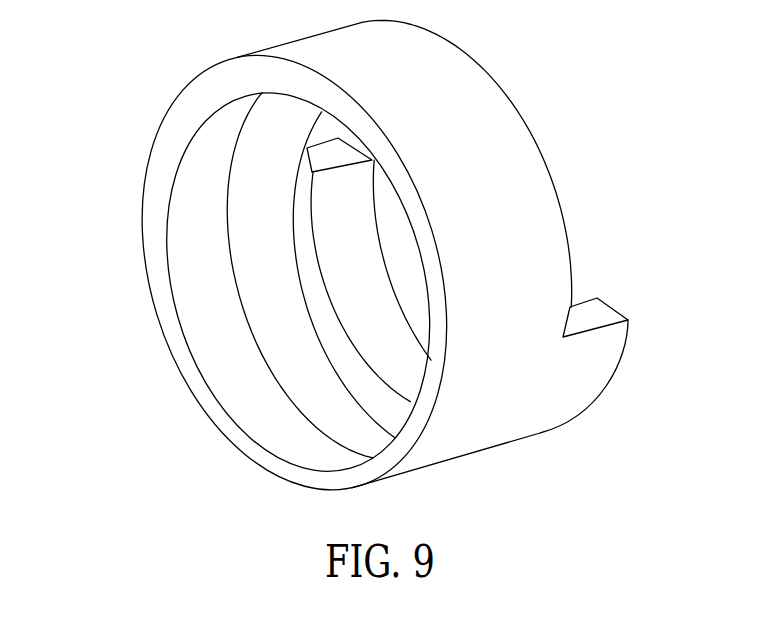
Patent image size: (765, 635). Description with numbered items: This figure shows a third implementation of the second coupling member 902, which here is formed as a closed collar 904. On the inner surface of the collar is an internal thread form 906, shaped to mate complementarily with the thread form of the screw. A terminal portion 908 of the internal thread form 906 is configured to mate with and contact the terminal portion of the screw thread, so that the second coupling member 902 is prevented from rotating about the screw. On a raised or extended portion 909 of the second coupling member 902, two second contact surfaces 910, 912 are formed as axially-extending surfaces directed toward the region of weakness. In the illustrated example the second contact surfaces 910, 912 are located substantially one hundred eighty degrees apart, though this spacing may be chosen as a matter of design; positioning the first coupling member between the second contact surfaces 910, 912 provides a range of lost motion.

The second coupling member 902 is at (128, 108).
The closed collar 904 is at (477, 78).
The internal thread form 906 is at (245, 332).
The terminal portion of the internal thread form 908 is at (292, 245).
The raised or extended portion 909 is at (580, 403).
The second contact surface 910 is at (602, 312).
The second contact surface 912 is at (340, 157).